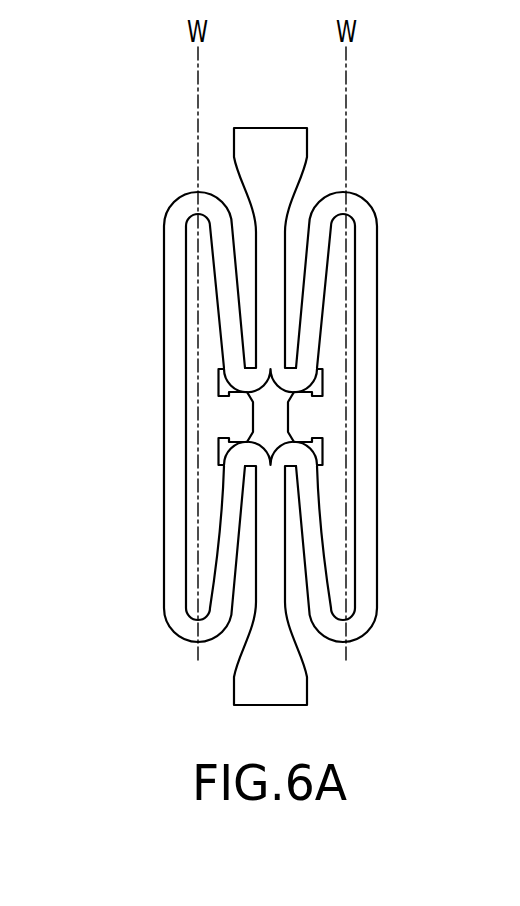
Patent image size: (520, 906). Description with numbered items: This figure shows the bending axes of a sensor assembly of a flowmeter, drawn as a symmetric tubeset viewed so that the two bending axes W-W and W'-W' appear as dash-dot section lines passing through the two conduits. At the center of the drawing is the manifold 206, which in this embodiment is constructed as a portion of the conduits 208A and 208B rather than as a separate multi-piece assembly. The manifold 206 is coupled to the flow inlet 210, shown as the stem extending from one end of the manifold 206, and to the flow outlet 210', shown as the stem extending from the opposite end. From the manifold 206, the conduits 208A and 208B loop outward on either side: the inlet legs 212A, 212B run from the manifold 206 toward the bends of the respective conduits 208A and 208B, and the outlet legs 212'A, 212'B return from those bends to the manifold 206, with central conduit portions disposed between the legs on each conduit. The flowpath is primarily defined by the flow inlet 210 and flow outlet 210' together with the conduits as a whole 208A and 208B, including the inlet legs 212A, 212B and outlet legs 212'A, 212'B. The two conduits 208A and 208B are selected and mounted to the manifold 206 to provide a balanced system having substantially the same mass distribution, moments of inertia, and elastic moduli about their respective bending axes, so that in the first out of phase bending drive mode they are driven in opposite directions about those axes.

The manifold 206 is at (288, 417).
The conduit 208A is at (172, 388).
The conduit 208B is at (368, 368).
The flow inlet 210 is at (209, 585).
The flow outlet 210' is at (208, 248).
The inlet leg 212A is at (227, 513).
The inlet leg 212B is at (313, 538).
The outlet leg 212'A is at (163, 297).
The outlet leg 212'B is at (378, 297).